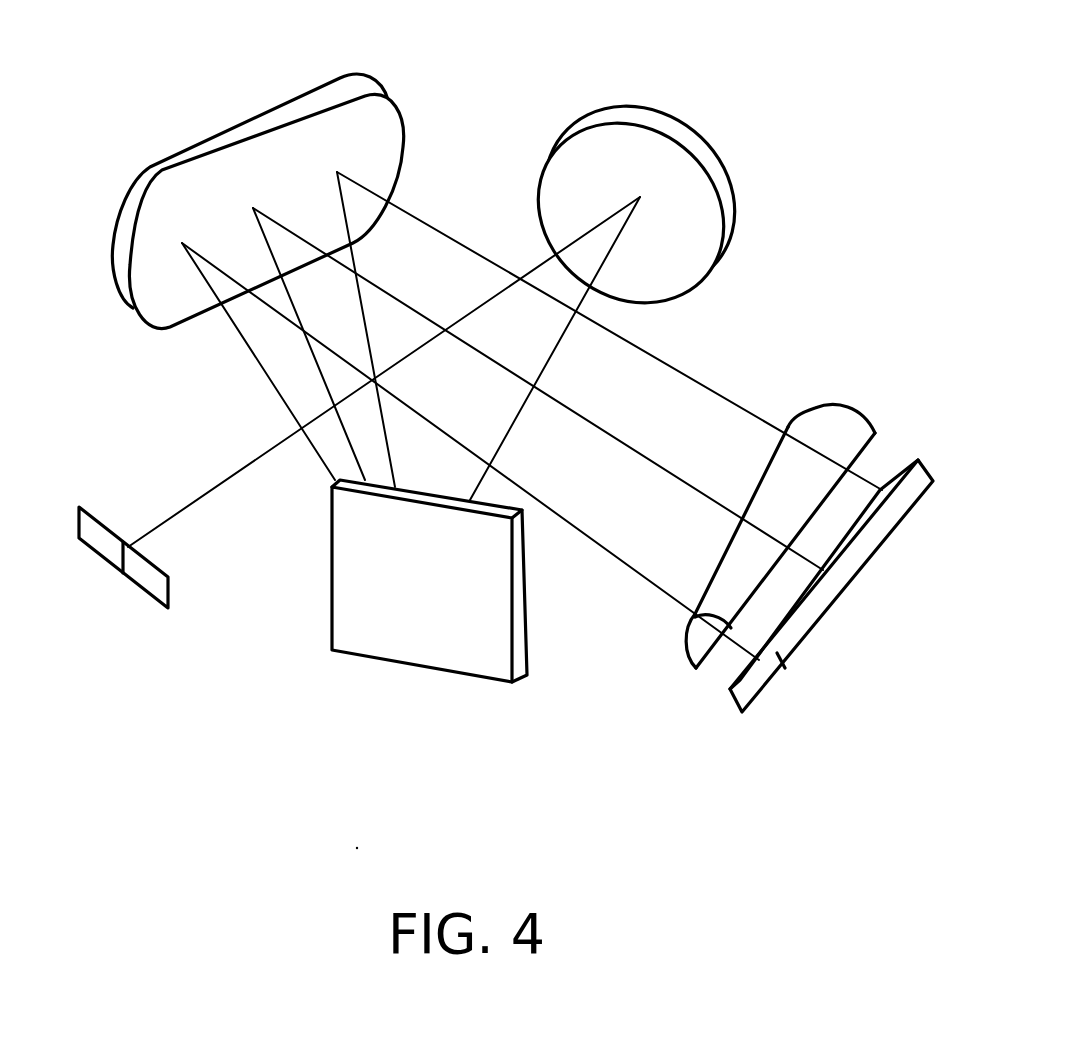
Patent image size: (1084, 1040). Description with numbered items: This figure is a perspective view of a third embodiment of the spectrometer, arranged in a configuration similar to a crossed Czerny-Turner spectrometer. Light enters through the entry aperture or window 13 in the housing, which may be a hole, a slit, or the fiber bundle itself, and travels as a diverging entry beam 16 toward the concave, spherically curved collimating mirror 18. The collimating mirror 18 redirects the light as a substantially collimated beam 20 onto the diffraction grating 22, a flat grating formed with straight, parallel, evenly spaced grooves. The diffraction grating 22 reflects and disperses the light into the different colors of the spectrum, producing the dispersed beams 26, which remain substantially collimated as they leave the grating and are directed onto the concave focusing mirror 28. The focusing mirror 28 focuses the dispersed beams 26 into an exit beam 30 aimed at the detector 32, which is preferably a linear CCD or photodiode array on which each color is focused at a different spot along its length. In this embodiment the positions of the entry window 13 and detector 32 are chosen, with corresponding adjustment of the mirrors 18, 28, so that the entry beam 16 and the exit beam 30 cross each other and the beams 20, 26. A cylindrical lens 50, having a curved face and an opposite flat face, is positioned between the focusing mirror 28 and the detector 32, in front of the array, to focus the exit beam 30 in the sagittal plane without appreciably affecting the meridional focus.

The entry aperture or window 13 is at (105, 540).
The entry beam 16 is at (215, 492).
The collimating mirror 18 is at (677, 133).
The collimated beam 20 is at (557, 352).
The diffraction grating 22 is at (425, 625).
The dispersed beams 26 is at (257, 360).
The focusing mirror 28 is at (215, 148).
The exit beam 30 is at (745, 407).
The detector 32 is at (863, 553).
The cylindrical lens 50 is at (855, 417).